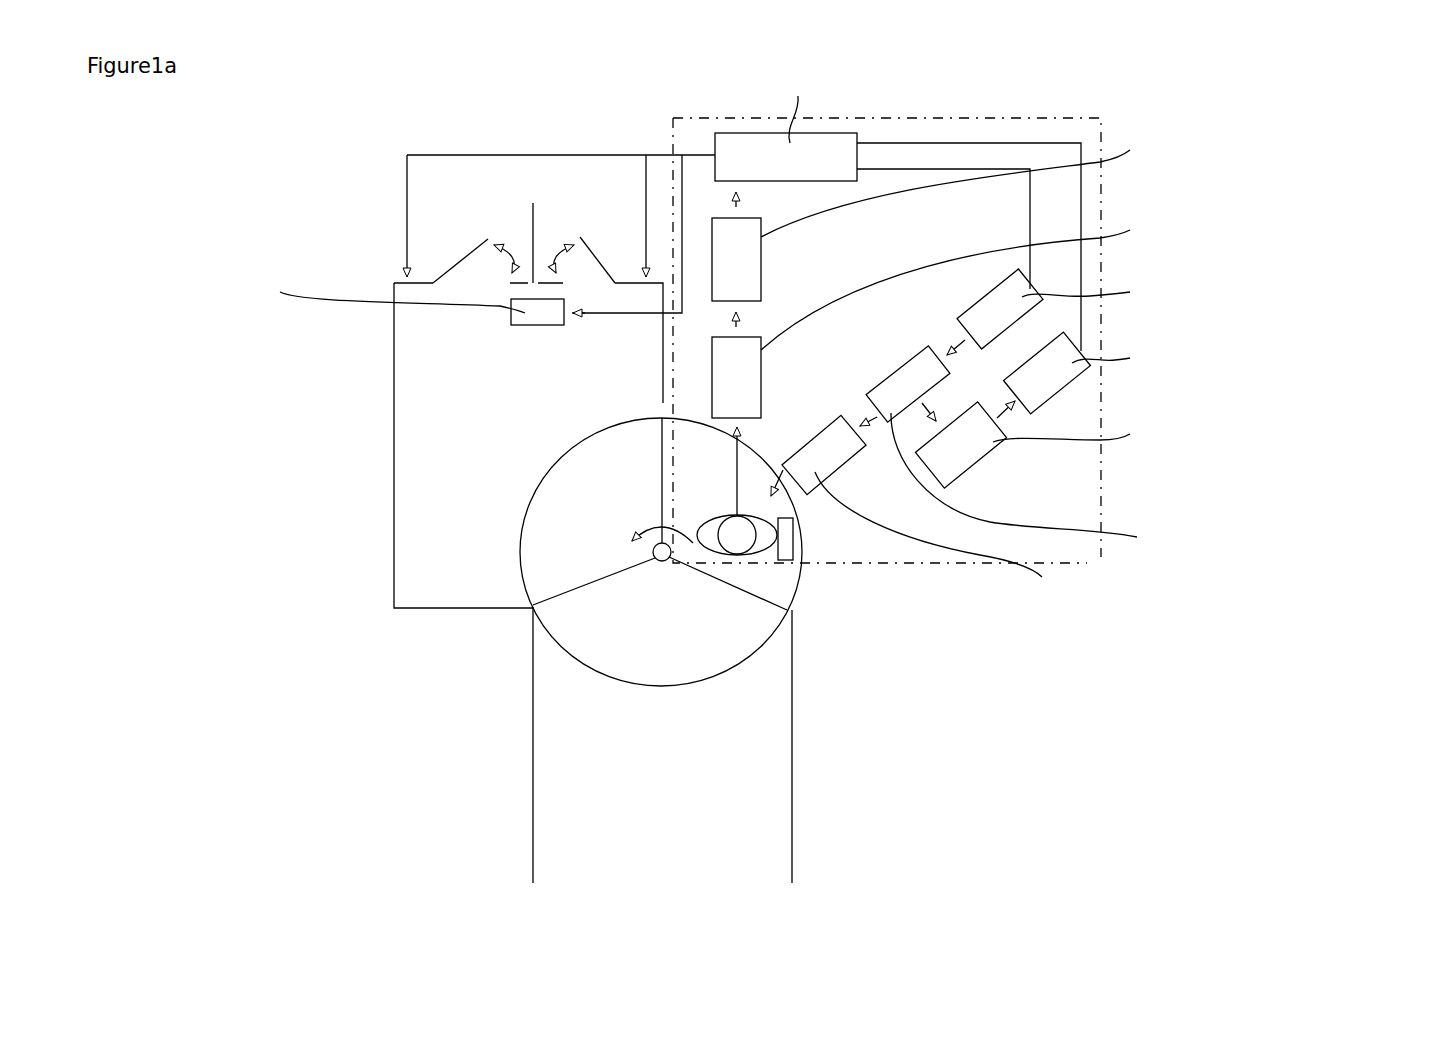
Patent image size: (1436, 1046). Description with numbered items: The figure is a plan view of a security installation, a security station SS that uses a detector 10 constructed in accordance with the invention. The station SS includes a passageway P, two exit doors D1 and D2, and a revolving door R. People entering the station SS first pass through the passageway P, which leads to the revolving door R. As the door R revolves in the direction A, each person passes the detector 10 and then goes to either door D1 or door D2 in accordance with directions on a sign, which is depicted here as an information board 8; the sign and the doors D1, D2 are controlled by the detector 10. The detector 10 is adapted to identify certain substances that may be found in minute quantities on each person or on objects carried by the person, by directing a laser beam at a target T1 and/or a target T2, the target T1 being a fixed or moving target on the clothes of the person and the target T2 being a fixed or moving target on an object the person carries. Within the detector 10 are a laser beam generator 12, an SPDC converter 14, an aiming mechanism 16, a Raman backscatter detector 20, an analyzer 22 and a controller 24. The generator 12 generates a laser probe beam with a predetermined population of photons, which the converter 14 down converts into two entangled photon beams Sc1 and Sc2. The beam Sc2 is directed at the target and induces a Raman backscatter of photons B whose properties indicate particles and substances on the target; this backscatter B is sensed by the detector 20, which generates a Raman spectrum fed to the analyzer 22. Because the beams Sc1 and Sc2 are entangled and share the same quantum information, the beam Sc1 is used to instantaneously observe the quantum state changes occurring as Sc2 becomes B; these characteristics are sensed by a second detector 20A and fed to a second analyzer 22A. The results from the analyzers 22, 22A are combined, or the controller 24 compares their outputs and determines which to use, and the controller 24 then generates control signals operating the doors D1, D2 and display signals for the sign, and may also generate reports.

The information board 8 is at (357, 293).
The detector 10 is at (887, 325).
The laser beam generator 12 is at (1082, 309).
The SPDC converter 14 is at (1123, 454).
The aiming mechanism 16 is at (964, 511).
The Raman backscatter detector 20 is at (1030, 313).
The detector 20A is at (1157, 445).
The analyzer 22 is at (1058, 224).
The analyzer 22A is at (1118, 375).
The controller 24 is at (898, 205).
The exit door D1 is at (275, 185).
The exit door D2 is at (275, 185).
The revolving door R is at (218, 443).
The direction A is at (662, 522).
The Raman backscatter of photons B is at (729, 471).
The target T1 is at (942, 630).
The target T2 is at (942, 630).
The photon beam Sc1 is at (946, 407).
The photon beam Sc2 is at (849, 409).
The security station SS is at (482, 454).
The passageway P is at (662, 745).